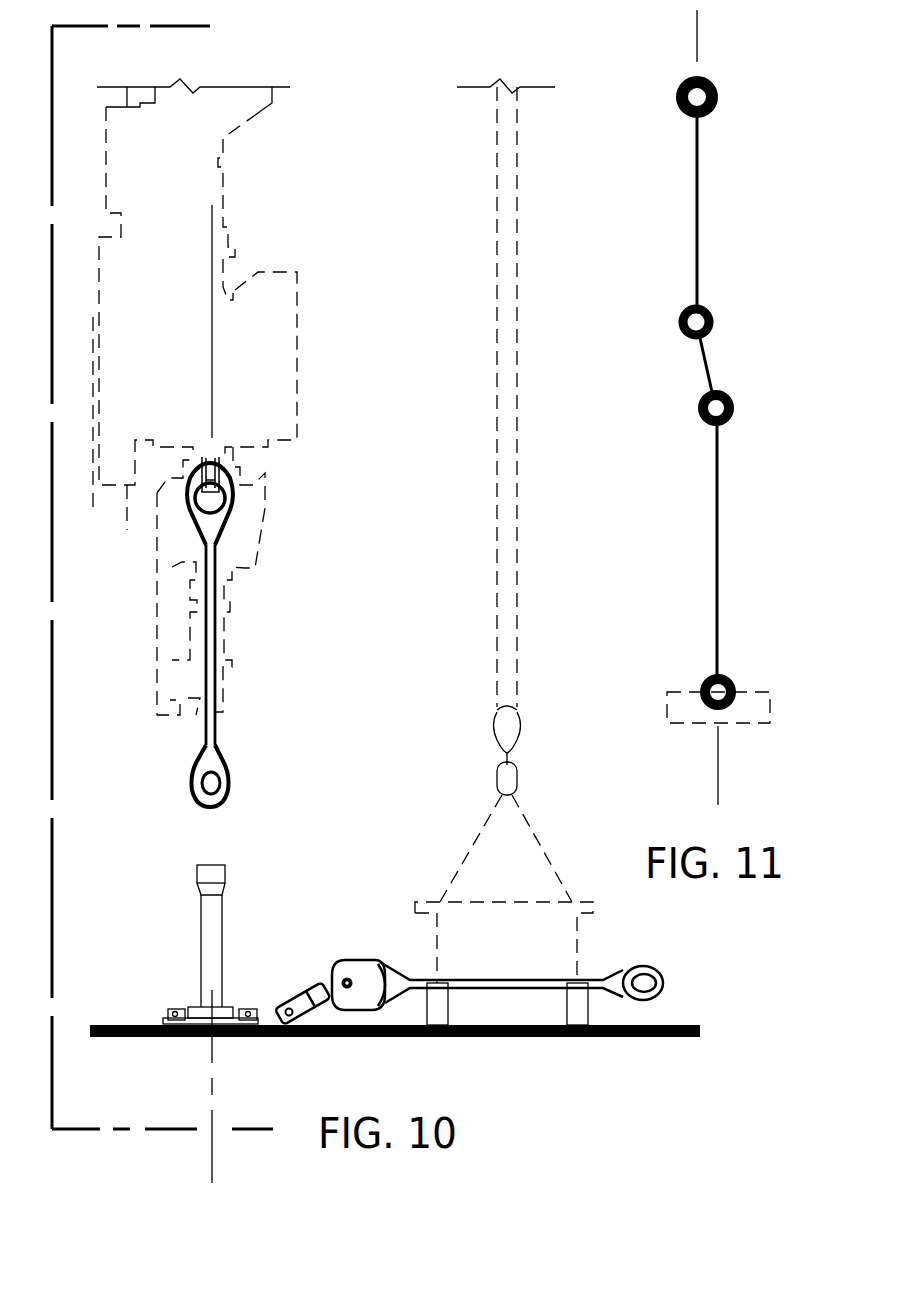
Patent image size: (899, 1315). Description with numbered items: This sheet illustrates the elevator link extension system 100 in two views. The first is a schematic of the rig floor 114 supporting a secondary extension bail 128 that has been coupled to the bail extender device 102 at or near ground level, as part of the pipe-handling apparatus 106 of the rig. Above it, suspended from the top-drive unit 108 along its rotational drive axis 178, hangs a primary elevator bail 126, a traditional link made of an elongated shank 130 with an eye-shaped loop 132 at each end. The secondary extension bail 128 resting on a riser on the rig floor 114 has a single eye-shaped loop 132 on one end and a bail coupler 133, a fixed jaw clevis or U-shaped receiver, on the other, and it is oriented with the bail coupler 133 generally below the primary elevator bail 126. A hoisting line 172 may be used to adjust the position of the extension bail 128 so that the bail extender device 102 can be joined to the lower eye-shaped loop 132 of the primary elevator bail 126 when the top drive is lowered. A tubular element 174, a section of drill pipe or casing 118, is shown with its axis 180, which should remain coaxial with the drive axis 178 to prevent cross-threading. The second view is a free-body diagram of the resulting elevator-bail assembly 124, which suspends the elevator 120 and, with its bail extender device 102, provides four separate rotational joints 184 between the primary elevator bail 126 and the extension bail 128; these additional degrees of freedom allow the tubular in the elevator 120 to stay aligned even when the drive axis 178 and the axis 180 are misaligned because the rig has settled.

In FIG. 11, the elevator link extension system 100 is at (660, 275).
In FIG. 10, the bail extender device 102 is at (290, 1000).
In FIG. 11, the bail extender device 102 is at (712, 360).
In FIG. 10, the pipe-handling apparatus 106 is at (253, 570).
In FIG. 10, the top-drive unit 108 is at (297, 383).
In FIG. 10, the rig floor 114 is at (618, 1038).
In FIG. 10, the drill pipe or casing 118 is at (201, 958).
In FIG. 11, the elevator 120 is at (687, 724).
In FIG. 11, the elevator-bail assembly 124 is at (782, 128).
In FIG. 10, the primary elevator bail 126 is at (228, 728).
In FIG. 11, the primary elevator bail 126 is at (699, 213).
In FIG. 10, the secondary extension bail 128 is at (537, 965).
In FIG. 11, the secondary extension bail 128 is at (720, 546).
In FIG. 10, the elongated shank 130 is at (216, 655).
In FIG. 10, the eye-shaped loop 132 is at (235, 506).
In FIG. 10, the bail coupler 133 is at (373, 1007).
In FIG. 10, the hoisting line 172 is at (517, 605).
In FIG. 10, the tubular element 174 is at (201, 925).
In FIG. 10, the rotational drive axis 178 is at (212, 382).
In FIG. 11, the rotational drive axis 178 is at (697, 33).
In FIG. 10, the axis 180 is at (212, 1158).
In FIG. 11, the axis 180 is at (719, 765).
In FIG. 11, the rotational joint 184 is at (712, 82).